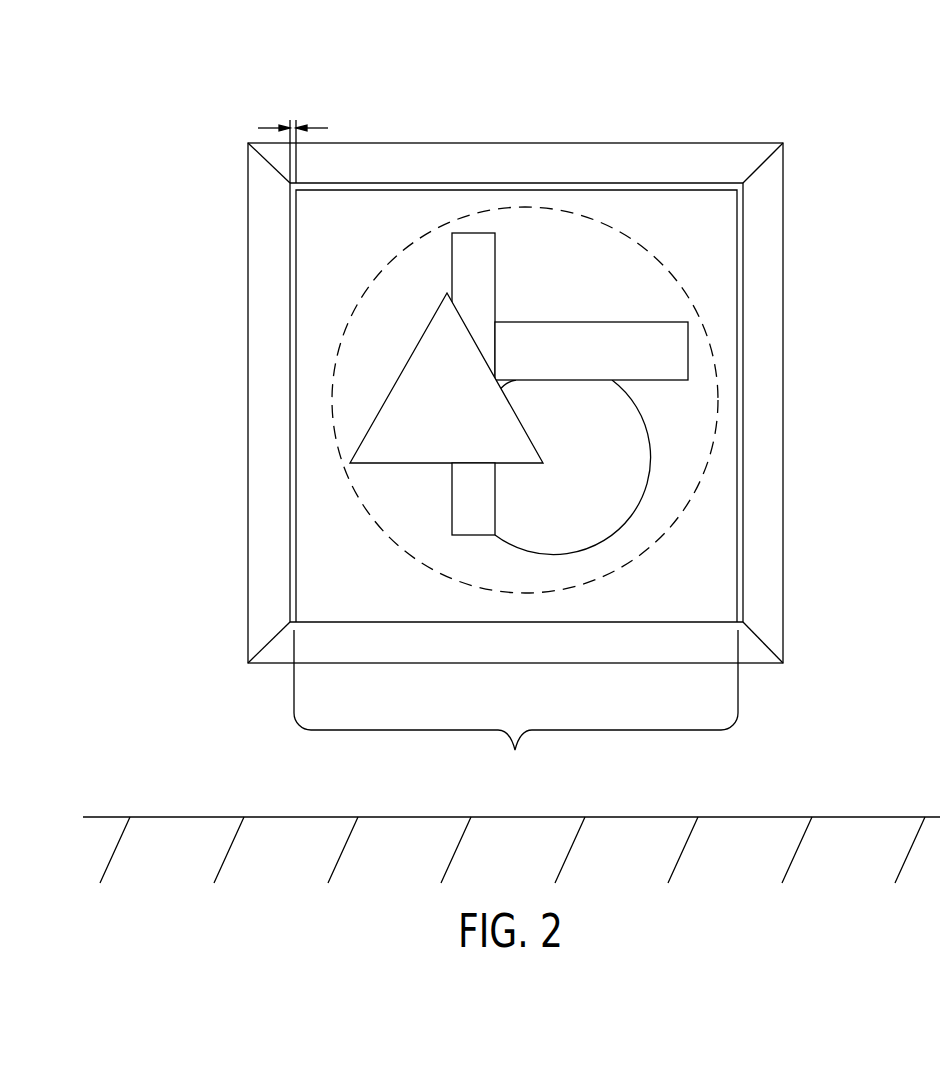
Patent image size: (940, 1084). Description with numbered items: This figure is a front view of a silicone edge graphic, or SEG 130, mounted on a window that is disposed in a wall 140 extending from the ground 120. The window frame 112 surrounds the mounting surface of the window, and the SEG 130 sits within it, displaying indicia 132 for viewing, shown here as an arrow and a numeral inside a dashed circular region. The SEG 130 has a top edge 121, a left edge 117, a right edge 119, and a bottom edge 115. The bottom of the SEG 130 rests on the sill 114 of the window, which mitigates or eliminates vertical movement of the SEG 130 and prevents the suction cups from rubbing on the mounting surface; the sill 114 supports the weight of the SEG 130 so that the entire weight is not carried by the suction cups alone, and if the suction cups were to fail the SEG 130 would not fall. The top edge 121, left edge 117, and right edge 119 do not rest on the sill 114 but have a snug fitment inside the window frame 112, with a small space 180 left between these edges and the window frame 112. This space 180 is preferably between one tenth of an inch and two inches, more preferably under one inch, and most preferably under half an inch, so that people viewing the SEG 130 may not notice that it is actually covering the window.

The wall 140 is at (523, 418).
The window frame 112 is at (758, 220).
The top edge 121 is at (645, 183).
The bottom edge 115 is at (655, 622).
The left edge 117 is at (288, 408).
The right edge 119 is at (740, 368).
The SEG 130 is at (717, 250).
The indicia 132 is at (700, 490).
The space 180 is at (292, 120).
The sill 114 is at (516, 710).
The ground 120 is at (861, 817).